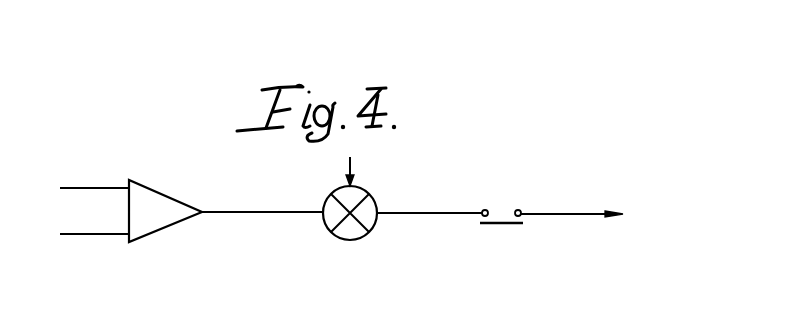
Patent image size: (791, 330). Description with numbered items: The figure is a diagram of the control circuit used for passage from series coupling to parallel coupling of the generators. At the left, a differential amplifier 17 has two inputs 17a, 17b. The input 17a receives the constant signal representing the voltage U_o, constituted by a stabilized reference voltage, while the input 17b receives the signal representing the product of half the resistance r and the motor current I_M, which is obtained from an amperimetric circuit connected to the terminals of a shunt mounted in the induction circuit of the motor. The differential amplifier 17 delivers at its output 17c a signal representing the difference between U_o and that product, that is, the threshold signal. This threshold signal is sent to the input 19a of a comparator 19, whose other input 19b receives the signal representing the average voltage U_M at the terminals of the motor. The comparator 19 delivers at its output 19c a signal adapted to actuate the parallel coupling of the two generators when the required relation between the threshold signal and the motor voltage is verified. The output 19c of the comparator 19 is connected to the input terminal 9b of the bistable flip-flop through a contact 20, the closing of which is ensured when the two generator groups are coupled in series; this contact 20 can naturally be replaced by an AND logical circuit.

The differential amplifier 17 is at (165, 211).
The input 17a is at (103, 233).
The input 17b is at (112, 187).
The output 17c is at (204, 214).
The comparator 19 is at (352, 230).
The input 19a is at (313, 214).
The input 19b is at (352, 170).
The output 19c is at (390, 214).
The contact 20 is at (500, 224).
The input terminal 9b is at (590, 204).